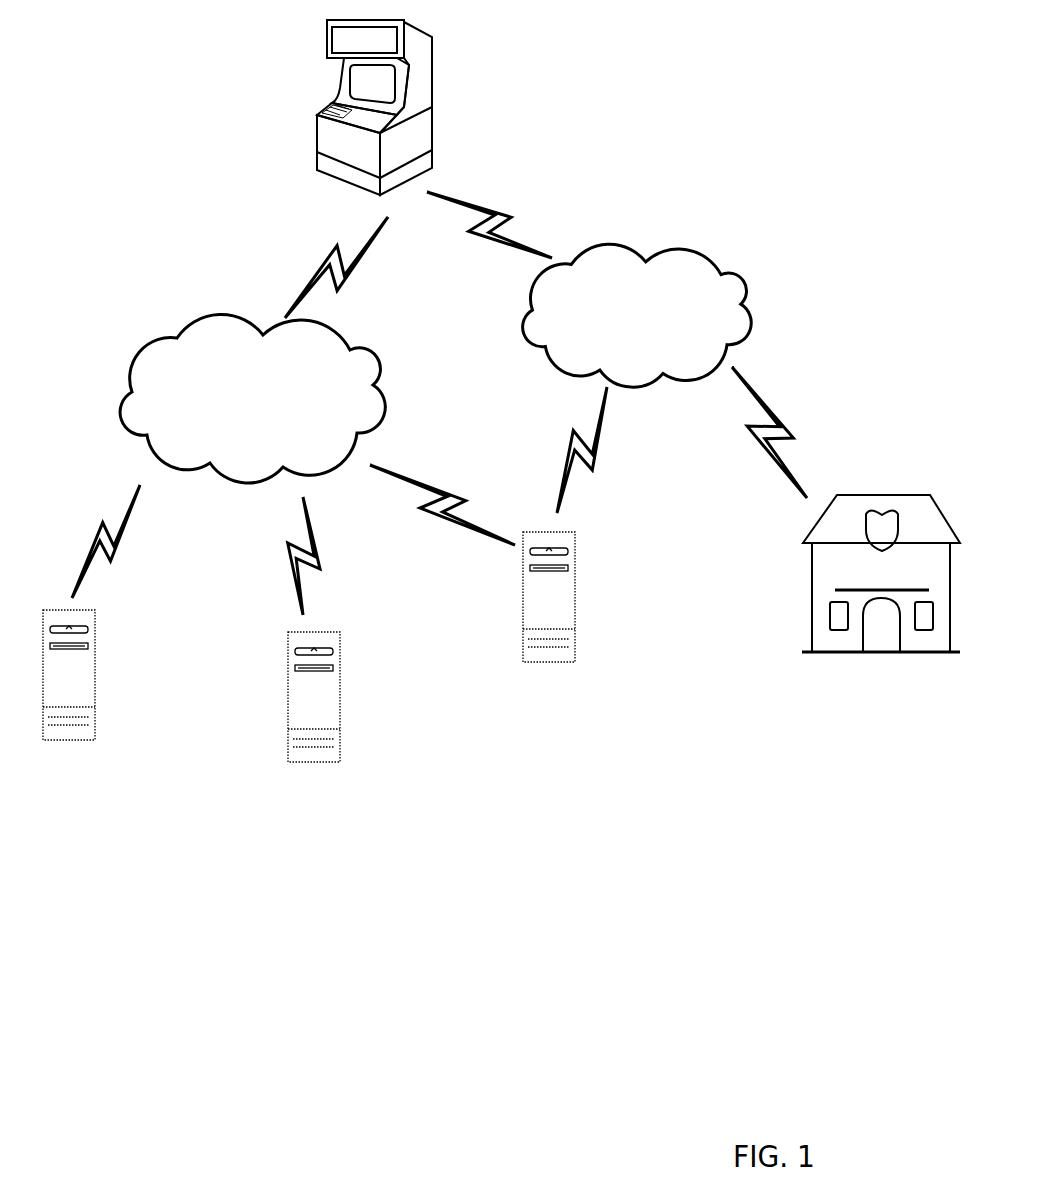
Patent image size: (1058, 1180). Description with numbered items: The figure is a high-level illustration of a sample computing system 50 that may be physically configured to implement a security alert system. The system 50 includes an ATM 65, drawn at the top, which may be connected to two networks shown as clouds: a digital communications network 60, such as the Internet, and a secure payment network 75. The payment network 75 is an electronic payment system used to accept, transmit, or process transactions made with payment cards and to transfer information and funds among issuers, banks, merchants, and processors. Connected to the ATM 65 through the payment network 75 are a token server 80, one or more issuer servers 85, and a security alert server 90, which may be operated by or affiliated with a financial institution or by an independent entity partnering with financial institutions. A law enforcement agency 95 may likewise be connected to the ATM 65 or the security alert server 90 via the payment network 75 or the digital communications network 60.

The computing system 50 is at (148, 230).
The ATM 65 is at (317, 130).
The secure payment network 75 is at (267, 414).
The digital communications network 60 is at (653, 332).
The token server 80 is at (85, 725).
The issuer server 85 is at (333, 725).
The security alert server 90 is at (568, 608).
The law enforcement agency 95 is at (847, 638).